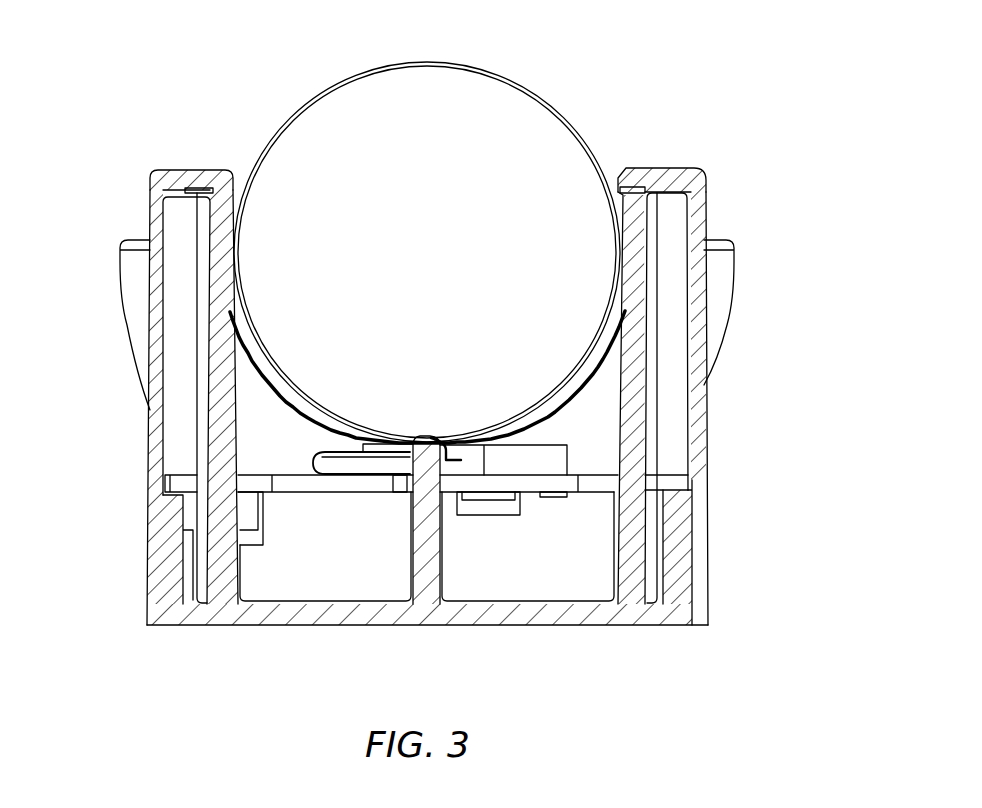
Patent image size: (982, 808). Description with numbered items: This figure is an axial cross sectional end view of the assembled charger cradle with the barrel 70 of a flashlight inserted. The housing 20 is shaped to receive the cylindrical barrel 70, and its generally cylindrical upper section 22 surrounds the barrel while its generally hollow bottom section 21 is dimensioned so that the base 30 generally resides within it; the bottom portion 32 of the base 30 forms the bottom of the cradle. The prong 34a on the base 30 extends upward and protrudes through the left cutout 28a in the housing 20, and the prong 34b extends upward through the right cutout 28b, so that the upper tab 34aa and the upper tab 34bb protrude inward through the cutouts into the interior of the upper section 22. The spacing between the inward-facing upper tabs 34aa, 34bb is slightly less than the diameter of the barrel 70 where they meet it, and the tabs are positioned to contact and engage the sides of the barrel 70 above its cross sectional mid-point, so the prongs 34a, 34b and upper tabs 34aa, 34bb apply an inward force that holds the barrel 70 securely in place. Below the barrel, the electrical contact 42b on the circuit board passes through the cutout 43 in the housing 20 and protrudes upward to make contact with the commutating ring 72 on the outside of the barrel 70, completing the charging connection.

The housing 20 is at (703, 208).
The bottom section 21 is at (538, 568).
The cylindrical upper section 22 is at (573, 400).
The left cutout 28a is at (228, 284).
The right cutout 28b is at (623, 263).
The base 30 is at (680, 554).
The bottom portion 32 is at (633, 626).
The prong 34a is at (218, 386).
The prong 34b is at (633, 378).
The upper tab 34aa is at (228, 205).
The upper tab 34bb is at (655, 185).
The electrical contact 42b is at (427, 438).
The cutout 43 is at (415, 440).
The barrel 70 is at (515, 80).
The commutating ring 72 is at (320, 92).